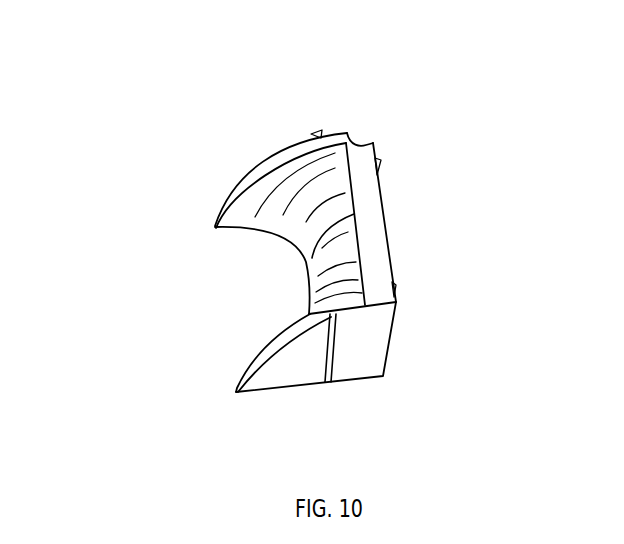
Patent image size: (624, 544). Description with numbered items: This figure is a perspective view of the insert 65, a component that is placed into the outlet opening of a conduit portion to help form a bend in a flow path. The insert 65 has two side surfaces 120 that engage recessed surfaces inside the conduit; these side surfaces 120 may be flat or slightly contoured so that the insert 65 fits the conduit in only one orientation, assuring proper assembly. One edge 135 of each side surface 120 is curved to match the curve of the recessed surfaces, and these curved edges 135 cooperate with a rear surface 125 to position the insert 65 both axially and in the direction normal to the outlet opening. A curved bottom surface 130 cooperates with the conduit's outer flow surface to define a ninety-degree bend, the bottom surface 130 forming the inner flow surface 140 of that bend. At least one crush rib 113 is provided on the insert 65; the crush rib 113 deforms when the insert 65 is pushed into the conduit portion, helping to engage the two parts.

The insert 65 is at (424, 49).
The crush rib 113 is at (317, 133).
The side surface 120 is at (335, 137).
The rear surface 125 is at (385, 228).
The bottom surface 130 is at (312, 177).
The curved edge 135 is at (250, 172).
The inner flow surface 140 is at (308, 260).